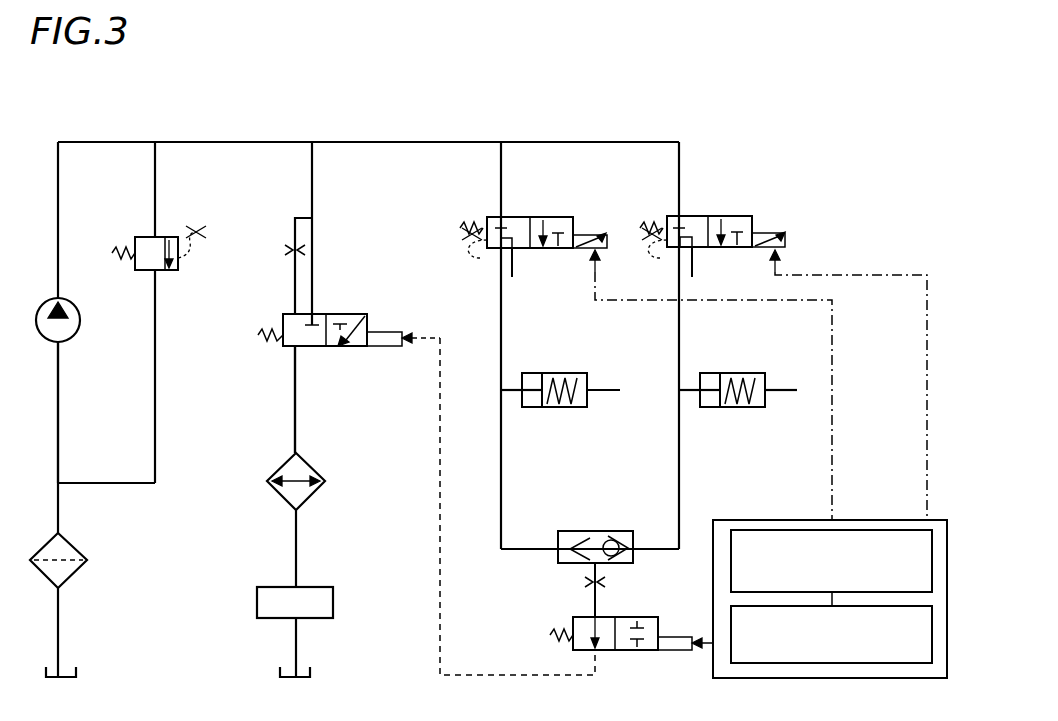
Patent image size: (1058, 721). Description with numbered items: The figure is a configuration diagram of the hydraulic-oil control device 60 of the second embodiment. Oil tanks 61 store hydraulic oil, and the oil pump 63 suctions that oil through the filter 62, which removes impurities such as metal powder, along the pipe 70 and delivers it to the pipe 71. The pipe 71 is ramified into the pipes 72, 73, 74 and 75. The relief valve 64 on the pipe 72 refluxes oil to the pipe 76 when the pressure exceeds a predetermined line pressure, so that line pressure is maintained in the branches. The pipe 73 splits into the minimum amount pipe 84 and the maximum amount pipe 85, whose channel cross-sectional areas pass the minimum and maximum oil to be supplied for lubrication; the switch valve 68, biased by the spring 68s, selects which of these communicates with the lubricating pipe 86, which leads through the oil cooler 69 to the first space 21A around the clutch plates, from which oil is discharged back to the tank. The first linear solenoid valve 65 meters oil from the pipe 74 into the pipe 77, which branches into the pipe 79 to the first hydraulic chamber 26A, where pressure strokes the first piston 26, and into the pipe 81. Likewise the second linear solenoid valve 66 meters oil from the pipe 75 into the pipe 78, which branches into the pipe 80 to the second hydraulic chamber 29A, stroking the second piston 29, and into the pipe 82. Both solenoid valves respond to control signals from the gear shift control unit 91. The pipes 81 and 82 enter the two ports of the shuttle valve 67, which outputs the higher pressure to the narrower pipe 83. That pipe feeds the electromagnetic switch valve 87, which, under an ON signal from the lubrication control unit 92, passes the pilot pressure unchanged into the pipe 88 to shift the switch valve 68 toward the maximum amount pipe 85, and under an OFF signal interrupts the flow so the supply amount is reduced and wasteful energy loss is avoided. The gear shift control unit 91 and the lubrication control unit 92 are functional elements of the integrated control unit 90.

The hydraulic-oil control device 60 is at (408, 99).
The oil tank 61 is at (76, 668).
The filter 62 is at (80, 550).
The oil pump 63 is at (80, 320).
The relief valve 64 is at (162, 272).
The first linear solenoid valve 65 is at (545, 216).
The second linear solenoid valve 66 is at (730, 216).
The shuttle valve 67 is at (605, 530).
The switch valve 68 is at (367, 315).
The spring 68s is at (272, 345).
The oil cooler 69 is at (316, 480).
The pipe 70 is at (60, 412).
The pipe 71 is at (60, 185).
The pipe 72 is at (155, 170).
The pipe 73 is at (312, 165).
The pipe 74 is at (501, 160).
The pipe 75 is at (679, 158).
The pipe 76 is at (154, 455).
The pipe 77 is at (530, 322).
The pipe 78 is at (681, 346).
The pipe 79 is at (508, 385).
The pipe 80 is at (688, 385).
The pipe 81 is at (503, 520).
The pipe 82 is at (681, 527).
The pipe 83 is at (592, 606).
The minimum amount pipe 84 is at (293, 268).
The maximum amount pipe 85 is at (312, 240).
The lubricating pipe 86 is at (297, 415).
The switch valve 87 is at (616, 616).
The pipe 88 is at (442, 596).
The control unit 90 is at (782, 520).
The gear shift control unit 91 is at (742, 530).
The lubrication control unit 92 is at (765, 664).
The first piston 26 is at (597, 389).
The first hydraulic chamber 26A is at (535, 406).
The second piston 29 is at (780, 388).
The second hydraulic chamber 29A is at (712, 406).
The first space 21A is at (290, 590).